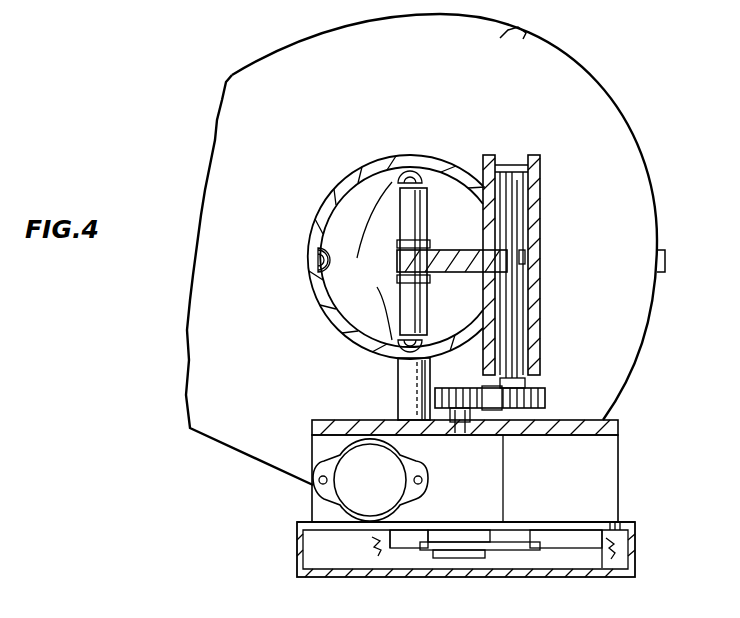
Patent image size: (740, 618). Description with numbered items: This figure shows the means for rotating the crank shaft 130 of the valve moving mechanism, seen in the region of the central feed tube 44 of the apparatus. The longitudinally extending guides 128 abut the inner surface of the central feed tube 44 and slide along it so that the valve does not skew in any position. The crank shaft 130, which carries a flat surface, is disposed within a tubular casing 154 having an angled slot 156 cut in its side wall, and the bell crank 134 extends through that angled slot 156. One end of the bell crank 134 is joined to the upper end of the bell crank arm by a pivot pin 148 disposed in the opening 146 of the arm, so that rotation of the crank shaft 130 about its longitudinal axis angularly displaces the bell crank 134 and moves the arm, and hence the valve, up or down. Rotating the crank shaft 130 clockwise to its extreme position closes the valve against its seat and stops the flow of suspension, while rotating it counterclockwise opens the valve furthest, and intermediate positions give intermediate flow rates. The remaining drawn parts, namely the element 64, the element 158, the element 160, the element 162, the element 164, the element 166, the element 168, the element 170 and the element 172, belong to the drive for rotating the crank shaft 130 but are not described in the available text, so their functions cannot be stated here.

The central feed tube 44 is at (348, 176).
The base plate 64 is at (437, 596).
The longitudinally extending guides 128 is at (332, 258).
The crank shaft 130 is at (510, 315).
The bell crank 134 is at (478, 240).
The opening 146 is at (426, 240).
The pivot pin 148 is at (420, 228).
The tubular casing 154 is at (537, 281).
The angled slot 156 is at (488, 280).
The mounting flange 158 is at (320, 503).
The housing box 160 is at (446, 468).
The spring clip 162 is at (410, 548).
The gear 164 is at (433, 395).
The top plate 166 is at (620, 420).
The base frame 168 is at (636, 548).
The gear shaft 170 is at (477, 410).
The bearing block 172 is at (544, 388).